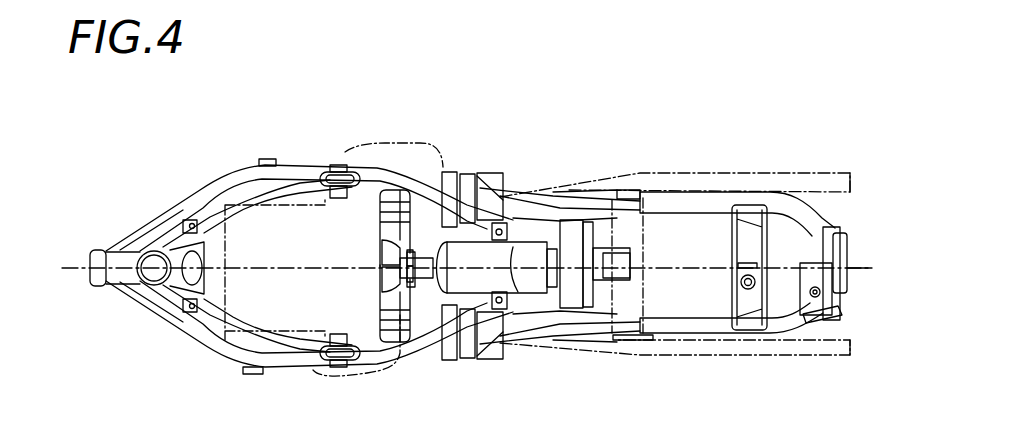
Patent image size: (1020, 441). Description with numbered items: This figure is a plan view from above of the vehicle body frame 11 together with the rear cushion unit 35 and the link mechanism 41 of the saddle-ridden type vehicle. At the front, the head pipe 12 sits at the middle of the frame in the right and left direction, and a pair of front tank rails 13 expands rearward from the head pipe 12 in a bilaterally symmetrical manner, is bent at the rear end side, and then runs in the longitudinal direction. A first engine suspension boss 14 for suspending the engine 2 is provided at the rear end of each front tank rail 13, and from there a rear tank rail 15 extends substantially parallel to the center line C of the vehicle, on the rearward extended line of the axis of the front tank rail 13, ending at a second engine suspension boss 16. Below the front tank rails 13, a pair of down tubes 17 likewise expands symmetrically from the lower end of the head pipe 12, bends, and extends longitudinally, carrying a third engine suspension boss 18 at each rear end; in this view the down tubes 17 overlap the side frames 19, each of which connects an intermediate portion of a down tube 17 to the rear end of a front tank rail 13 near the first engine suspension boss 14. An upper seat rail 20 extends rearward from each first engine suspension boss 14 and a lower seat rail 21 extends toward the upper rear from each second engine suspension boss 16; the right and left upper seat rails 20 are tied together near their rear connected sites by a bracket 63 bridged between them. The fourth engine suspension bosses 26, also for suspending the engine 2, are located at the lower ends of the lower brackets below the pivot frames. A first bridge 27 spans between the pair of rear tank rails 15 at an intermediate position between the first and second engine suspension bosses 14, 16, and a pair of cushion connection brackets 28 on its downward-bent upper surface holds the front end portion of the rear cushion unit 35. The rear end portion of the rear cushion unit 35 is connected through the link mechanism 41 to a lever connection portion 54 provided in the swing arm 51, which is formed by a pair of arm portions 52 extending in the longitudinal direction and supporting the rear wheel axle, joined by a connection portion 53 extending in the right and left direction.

The engine 2 is at (291, 316).
The vehicle body frame 11 is at (230, 140).
The head pipe 12 is at (120, 260).
The front tank rail 13 is at (217, 213).
The first engine suspension boss 14 is at (343, 166).
The rear tank rail 15 is at (443, 176).
The second engine suspension boss 16 is at (478, 173).
The down tube 17 is at (157, 227).
The third engine suspension boss 18 is at (268, 165).
The side frame 19 is at (190, 202).
The upper seat rail 20 is at (670, 207).
The lower seat rail 21 is at (547, 199).
The fourth engine suspension boss 26 is at (458, 172).
The first bridge 27 is at (383, 317).
The cushion connection bracket 28 is at (380, 253).
The rear cushion unit 35 is at (520, 253).
The link mechanism 41 is at (598, 234).
The swing arm 51 is at (810, 152).
The arm portion 52 is at (740, 182).
The connection portion 53 is at (627, 300).
The lever connection portion 54 is at (627, 249).
The bracket 63 is at (764, 240).
The center line C is at (860, 262).